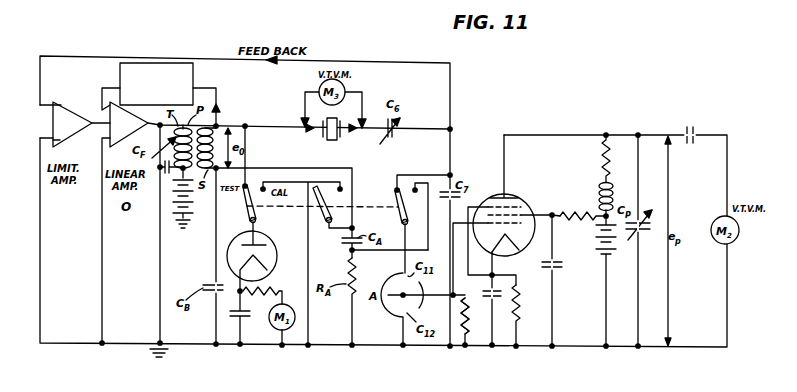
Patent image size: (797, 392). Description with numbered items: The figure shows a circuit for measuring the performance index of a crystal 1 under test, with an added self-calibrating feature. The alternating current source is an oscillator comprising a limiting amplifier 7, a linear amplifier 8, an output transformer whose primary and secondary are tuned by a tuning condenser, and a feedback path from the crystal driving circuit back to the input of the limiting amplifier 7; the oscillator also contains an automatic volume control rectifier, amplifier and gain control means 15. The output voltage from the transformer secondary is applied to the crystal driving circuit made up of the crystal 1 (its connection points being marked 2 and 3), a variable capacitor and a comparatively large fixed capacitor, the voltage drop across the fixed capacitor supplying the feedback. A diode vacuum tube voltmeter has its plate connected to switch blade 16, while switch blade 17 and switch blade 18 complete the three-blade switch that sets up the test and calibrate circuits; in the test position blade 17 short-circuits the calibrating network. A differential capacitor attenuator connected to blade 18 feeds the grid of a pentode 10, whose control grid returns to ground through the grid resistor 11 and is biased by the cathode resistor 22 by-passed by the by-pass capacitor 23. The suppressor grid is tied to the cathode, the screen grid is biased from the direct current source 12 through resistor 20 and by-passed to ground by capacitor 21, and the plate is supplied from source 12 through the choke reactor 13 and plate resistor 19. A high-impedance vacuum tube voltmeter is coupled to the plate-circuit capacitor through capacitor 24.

The crystal 1 is at (333, 142).
The crystal terminal 2 is at (305, 137).
The crystal terminal 3 is at (355, 137).
The limiting amplifier 7 is at (61, 105).
The linear amplifier 8 is at (108, 113).
The pentode 10 is at (532, 201).
The grid resistor 11 is at (474, 300).
The direct current source 12 is at (598, 258).
The choke reactor 13 is at (609, 190).
The automatic volume control rectifier, amplifier and gain control means 15 is at (193, 76).
The switch blade 16 is at (257, 220).
The switch blade 17 is at (329, 223).
The switch blade 18 is at (396, 198).
The plate resistor 19 is at (601, 158).
The resistor 20 is at (576, 212).
The capacitor 21 is at (557, 262).
The cathode resistor 22 is at (518, 318).
The by-pass capacitor 23 is at (496, 300).
The capacitor 24 is at (693, 131).